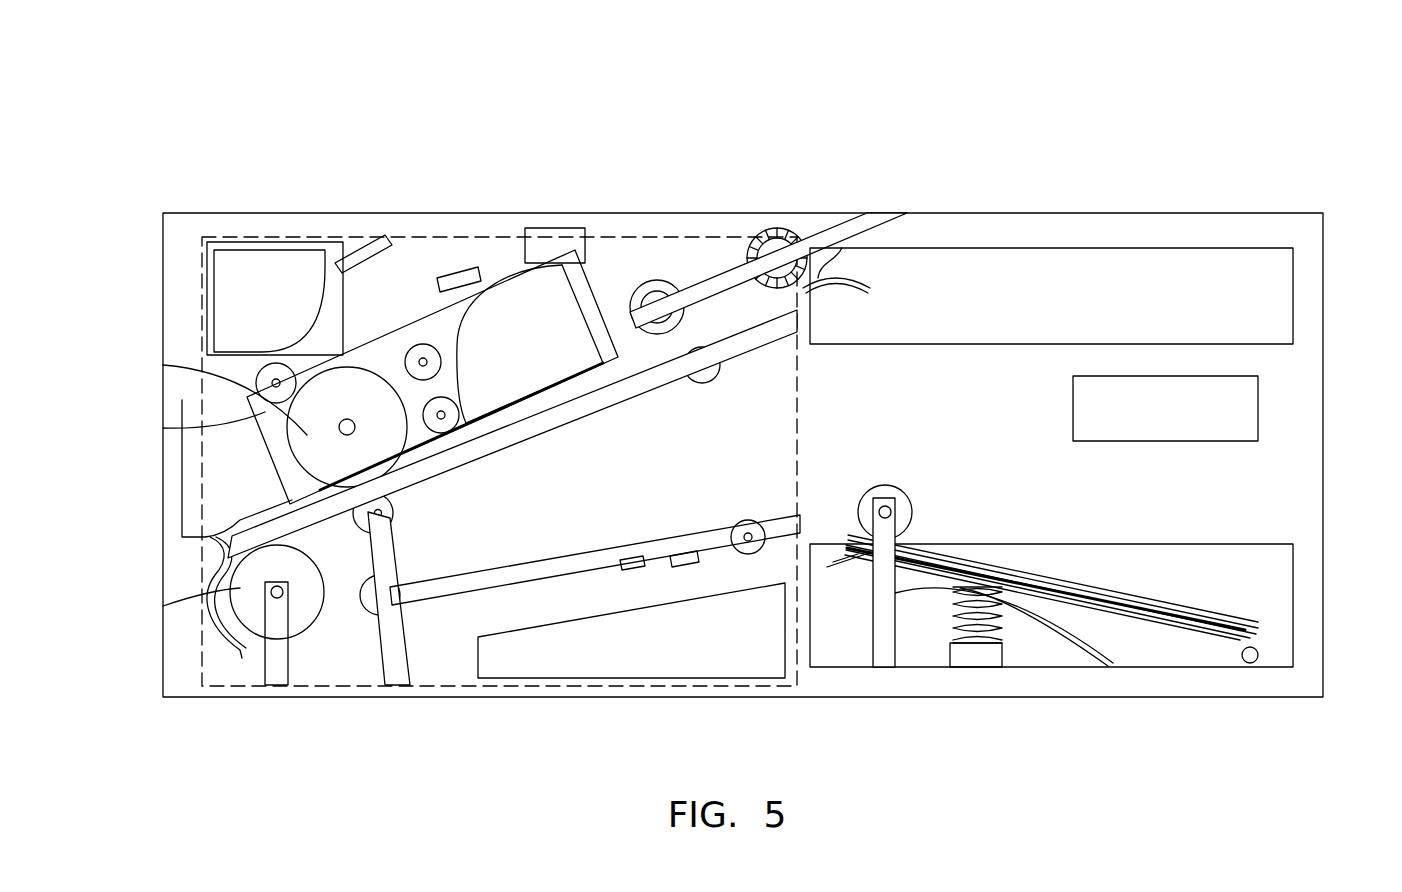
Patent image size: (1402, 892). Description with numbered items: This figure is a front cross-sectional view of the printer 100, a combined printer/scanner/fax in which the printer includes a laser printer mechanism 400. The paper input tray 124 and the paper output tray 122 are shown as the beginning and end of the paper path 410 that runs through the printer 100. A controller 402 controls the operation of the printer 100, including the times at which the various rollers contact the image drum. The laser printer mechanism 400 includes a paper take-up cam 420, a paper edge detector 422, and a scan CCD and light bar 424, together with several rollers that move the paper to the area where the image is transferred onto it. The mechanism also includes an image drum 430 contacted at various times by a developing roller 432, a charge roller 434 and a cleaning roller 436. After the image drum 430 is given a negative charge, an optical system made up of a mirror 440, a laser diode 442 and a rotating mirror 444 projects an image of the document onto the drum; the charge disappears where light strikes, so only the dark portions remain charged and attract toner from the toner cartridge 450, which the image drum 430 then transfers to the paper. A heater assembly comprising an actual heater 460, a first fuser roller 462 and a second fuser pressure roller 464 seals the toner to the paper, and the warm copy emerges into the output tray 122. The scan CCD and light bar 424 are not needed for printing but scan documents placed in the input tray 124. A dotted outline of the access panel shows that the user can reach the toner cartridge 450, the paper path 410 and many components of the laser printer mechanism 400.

The printer 100 is at (1084, 168).
The paper output tray 122 is at (1270, 278).
The paper input tray 124 is at (1270, 578).
The laser printer mechanism 400 is at (213, 590).
The controller 402 is at (1250, 403).
The paper path 410 is at (842, 255).
The paper take-up cam 420 is at (882, 494).
The paper edge detector 422 is at (695, 590).
The scan CCD and light bar 424 is at (626, 560).
The image drum 430 is at (305, 435).
The developing roller 432 is at (268, 382).
The charge roller 434 is at (419, 352).
The cleaning roller 436 is at (446, 428).
The mirror 440 is at (364, 250).
The laser diode 442 is at (460, 266).
The rotating mirror 444 is at (566, 250).
The toner cartridge 450 is at (230, 258).
The heater 460 is at (655, 293).
The first fuser roller 462 is at (670, 285).
The second fuser pressure roller 464 is at (702, 372).